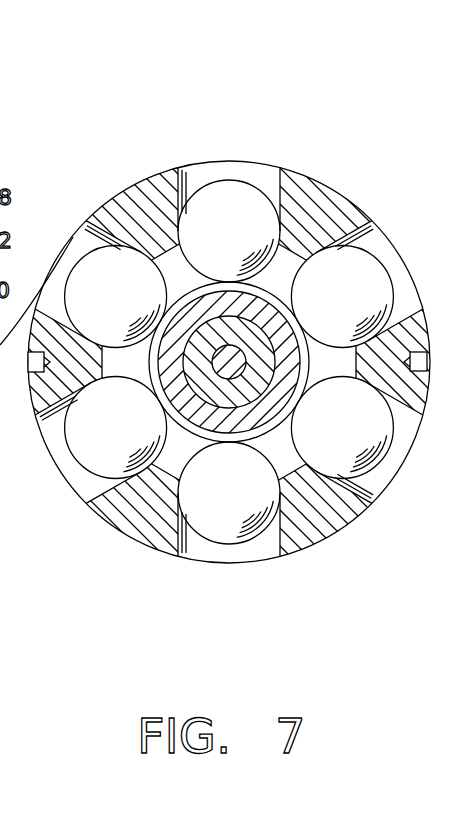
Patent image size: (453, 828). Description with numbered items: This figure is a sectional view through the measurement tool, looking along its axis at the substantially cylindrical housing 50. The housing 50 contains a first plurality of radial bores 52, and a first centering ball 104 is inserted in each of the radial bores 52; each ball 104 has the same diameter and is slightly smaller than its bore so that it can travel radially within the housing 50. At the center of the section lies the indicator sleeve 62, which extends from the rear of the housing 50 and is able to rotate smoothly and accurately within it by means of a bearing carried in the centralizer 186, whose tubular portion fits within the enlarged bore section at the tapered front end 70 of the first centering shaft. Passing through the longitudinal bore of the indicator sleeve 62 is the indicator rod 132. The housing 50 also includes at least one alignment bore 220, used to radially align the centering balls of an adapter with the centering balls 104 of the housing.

The housing 50 is at (160, 173).
The first plurality of radial bores 52 is at (263, 165).
The indicator sleeve 62 is at (224, 412).
The tapered front end 70 is at (175, 272).
The first centering ball 104 is at (226, 213).
The indicator rod 132 is at (163, 397).
The centralizer 186 is at (257, 376).
The alignment bore 220 is at (428, 360).